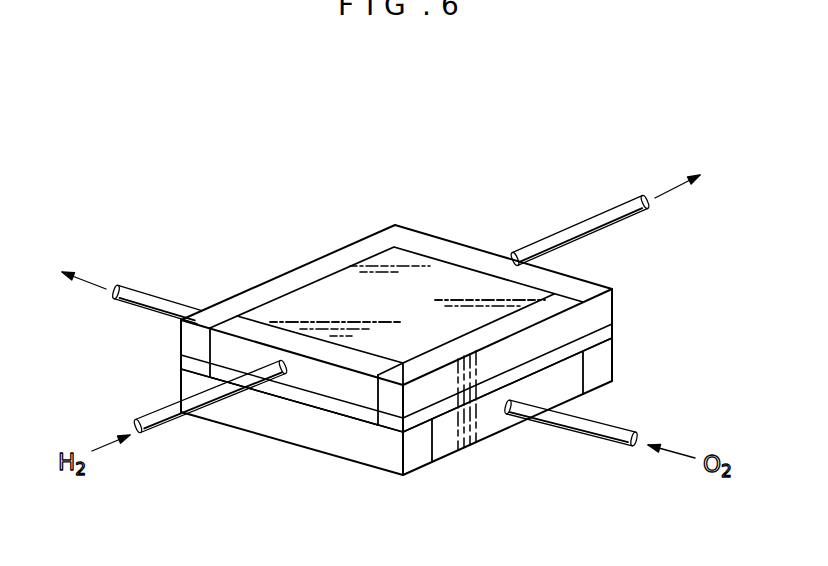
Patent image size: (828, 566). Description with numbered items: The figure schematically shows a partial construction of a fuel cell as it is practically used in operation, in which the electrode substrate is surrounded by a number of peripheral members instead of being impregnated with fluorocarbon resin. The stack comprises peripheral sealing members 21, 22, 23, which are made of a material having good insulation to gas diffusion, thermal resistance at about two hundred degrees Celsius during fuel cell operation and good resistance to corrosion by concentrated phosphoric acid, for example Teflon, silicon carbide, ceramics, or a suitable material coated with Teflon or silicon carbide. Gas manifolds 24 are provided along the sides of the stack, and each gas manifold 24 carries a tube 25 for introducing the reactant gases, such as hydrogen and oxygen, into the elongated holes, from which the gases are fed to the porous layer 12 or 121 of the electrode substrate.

The porous layer 12 is at (330, 288).
The porous layer 121 is at (403, 275).
The peripheral sealing member 21 is at (396, 224).
The peripheral sealing member 22 is at (612, 332).
The peripheral sealing member 23 is at (340, 410).
The gas manifold 24 is at (462, 250).
The tube 25 is at (600, 208).